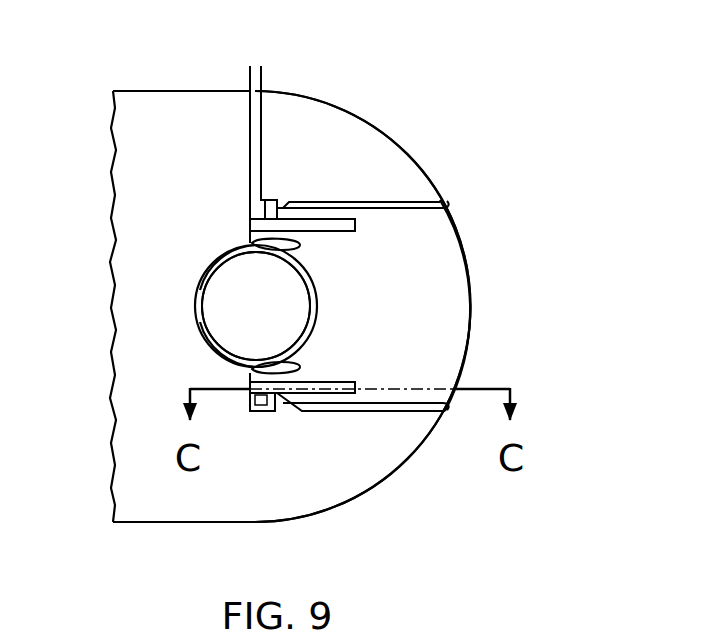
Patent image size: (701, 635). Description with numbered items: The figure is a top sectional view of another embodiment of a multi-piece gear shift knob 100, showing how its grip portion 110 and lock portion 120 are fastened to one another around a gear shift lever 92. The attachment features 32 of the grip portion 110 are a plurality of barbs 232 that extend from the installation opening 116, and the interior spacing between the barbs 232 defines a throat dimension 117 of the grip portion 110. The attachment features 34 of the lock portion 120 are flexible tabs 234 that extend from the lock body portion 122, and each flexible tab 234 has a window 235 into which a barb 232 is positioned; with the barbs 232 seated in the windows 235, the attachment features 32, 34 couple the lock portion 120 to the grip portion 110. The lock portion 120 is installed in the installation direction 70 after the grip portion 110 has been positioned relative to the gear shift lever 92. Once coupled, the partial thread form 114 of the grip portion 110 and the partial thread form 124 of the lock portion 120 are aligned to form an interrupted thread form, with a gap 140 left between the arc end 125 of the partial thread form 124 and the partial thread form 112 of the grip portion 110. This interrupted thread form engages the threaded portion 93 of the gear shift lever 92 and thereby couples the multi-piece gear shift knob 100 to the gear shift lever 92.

The multi-piece gear shift knob 100 is at (483, 70).
The grip portion 110 is at (353, 86).
The partial thread form 112 is at (146, 524).
The partial thread form 114 is at (200, 300).
The installation opening 116 is at (445, 206).
The throat dimension 117 is at (250, 219).
The lock portion 120 is at (477, 261).
The lock body portion 122 is at (472, 338).
The partial thread form 124 is at (319, 308).
The arc end 125 is at (297, 245).
The gap 140 is at (290, 73).
The installation direction 70 is at (307, 47).
The gear shift lever 92 is at (206, 283).
The threaded portion 93 is at (198, 336).
The barbs 232 is at (281, 214).
The flexible tabs 234 is at (257, 212).
The windows 235 is at (285, 208).
The attachment features 32 is at (289, 424).
The attachment features 34 is at (265, 424).